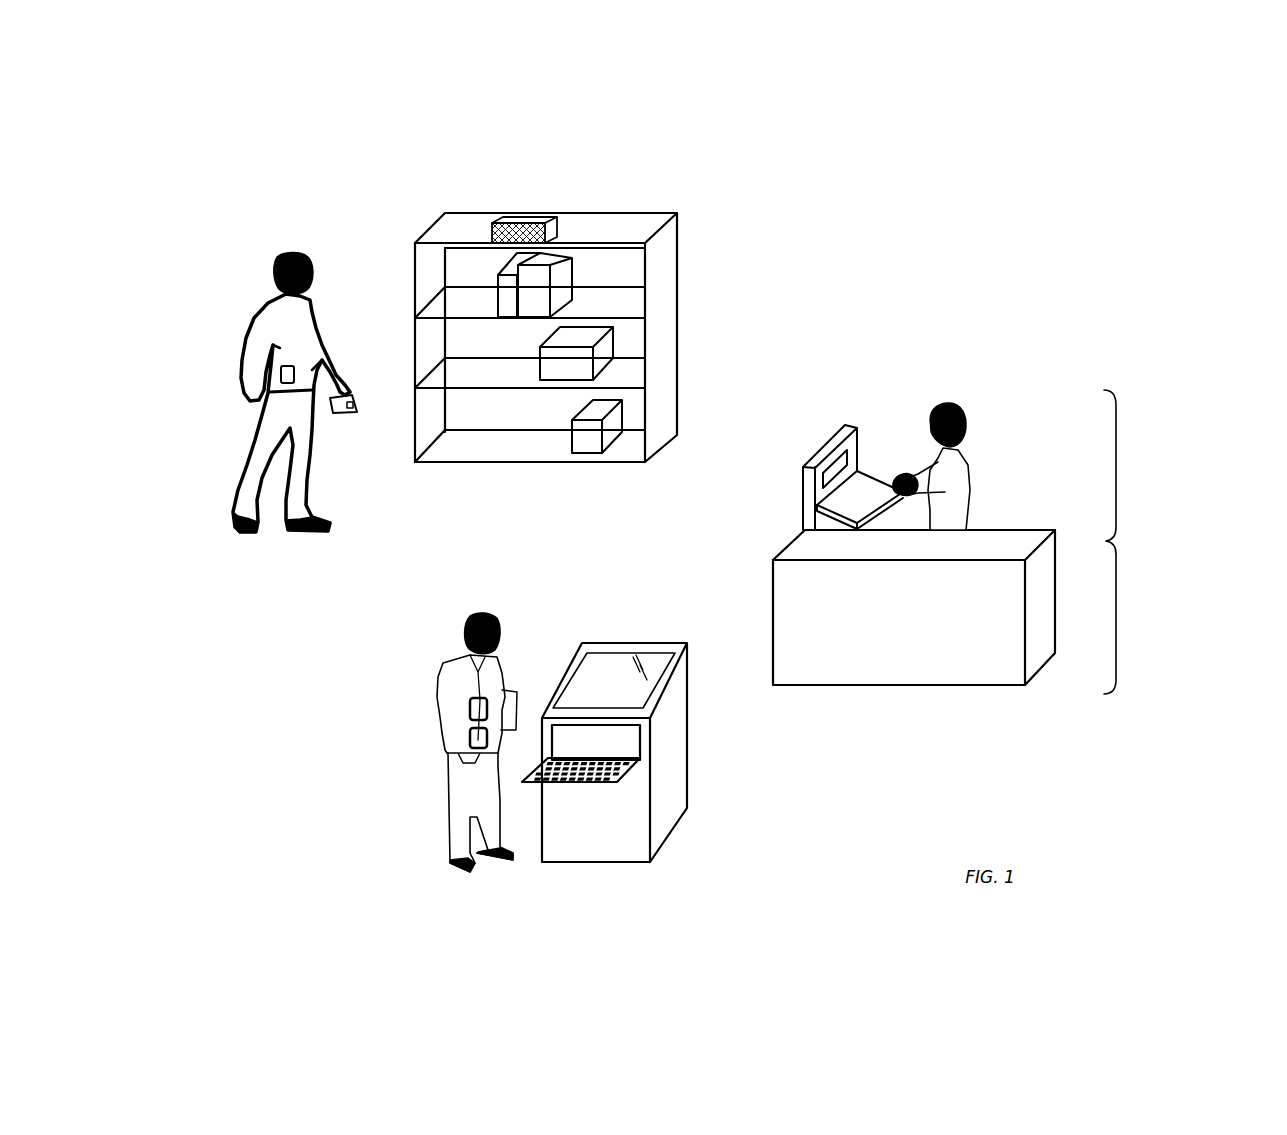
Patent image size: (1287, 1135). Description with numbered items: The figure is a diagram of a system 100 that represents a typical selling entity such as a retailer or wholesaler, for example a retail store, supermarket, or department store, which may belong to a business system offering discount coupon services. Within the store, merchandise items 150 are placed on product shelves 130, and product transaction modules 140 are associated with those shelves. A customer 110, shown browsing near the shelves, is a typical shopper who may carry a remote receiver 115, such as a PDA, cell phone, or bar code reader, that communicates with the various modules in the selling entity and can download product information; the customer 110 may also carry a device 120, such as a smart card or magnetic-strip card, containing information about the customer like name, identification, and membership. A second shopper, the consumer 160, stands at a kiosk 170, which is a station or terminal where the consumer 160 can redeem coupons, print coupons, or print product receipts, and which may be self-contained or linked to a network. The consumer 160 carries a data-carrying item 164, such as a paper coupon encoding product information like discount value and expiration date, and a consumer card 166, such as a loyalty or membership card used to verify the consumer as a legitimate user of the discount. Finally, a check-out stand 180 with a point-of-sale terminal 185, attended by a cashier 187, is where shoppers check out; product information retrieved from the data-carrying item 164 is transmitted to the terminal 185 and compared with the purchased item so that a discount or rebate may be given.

The system 100 is at (1149, 157).
The customer 110 is at (238, 530).
The remote receiver 115 is at (343, 414).
The device 120 is at (243, 358).
The product shelf 130 is at (443, 223).
The product transaction module 140 is at (533, 223).
The merchandise item 150 is at (565, 278).
The consumer 160 is at (462, 840).
The data-carrying item 164 is at (474, 706).
The consumer card 166 is at (472, 746).
The kiosk 170 is at (672, 752).
The check-out stand 180 is at (1008, 542).
The point-of-sale (POS) terminal 185 is at (850, 425).
The cashier 187 is at (967, 460).